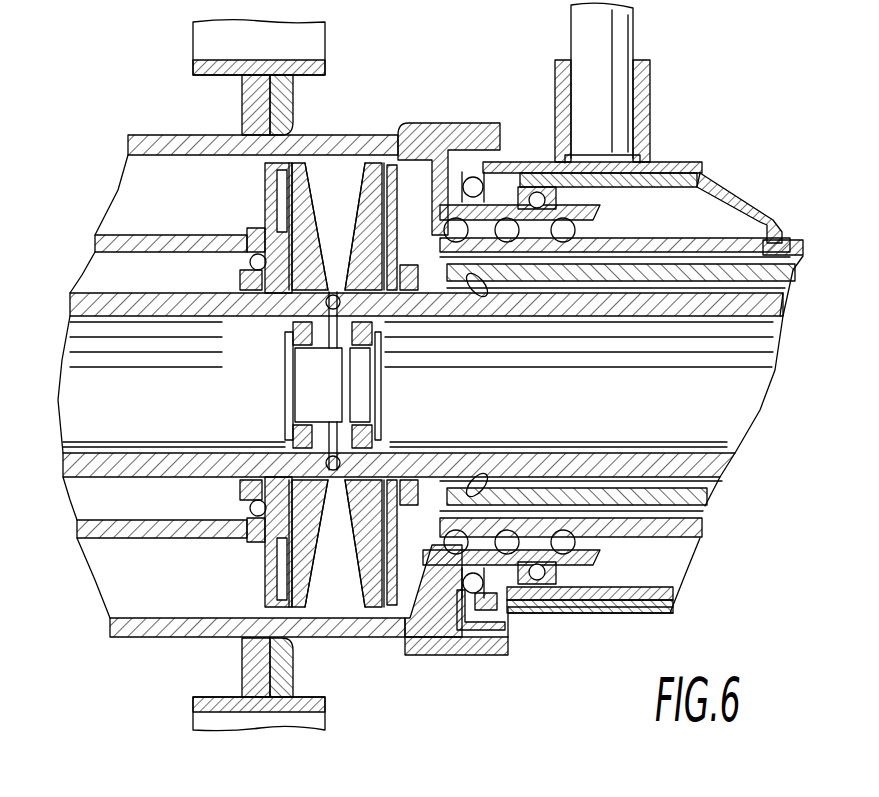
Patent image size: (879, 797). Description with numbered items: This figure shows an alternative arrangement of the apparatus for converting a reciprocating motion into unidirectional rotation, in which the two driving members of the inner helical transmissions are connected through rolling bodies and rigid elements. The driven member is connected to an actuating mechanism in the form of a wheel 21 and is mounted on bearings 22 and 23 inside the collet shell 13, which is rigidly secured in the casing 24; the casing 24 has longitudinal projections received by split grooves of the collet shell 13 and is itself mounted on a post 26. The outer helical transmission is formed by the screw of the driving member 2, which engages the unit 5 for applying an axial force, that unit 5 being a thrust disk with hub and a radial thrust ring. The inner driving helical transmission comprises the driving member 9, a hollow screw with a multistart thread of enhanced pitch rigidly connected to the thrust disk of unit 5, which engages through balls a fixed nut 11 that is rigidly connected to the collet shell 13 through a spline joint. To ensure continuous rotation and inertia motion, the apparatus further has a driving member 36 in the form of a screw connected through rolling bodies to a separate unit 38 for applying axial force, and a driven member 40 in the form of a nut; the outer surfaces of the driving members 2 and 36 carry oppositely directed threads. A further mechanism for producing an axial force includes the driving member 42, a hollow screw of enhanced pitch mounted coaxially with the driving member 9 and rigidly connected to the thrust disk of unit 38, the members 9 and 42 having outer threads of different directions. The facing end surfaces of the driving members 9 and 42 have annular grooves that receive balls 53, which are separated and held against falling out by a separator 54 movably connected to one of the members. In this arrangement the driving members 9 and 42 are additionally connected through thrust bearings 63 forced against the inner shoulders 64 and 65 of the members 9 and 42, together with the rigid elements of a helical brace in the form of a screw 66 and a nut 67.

The driving member 2 is at (708, 236).
The unit for applying an axial force 5 is at (368, 163).
The driving member 9 is at (775, 328).
The fixed nut 11 is at (800, 262).
The collet shell 13 is at (757, 212).
The wheel 21 is at (205, 35).
The bearing 22 is at (462, 165).
The bearing 23 is at (533, 188).
The casing 24 is at (672, 162).
The post 26 is at (636, 32).
The driving member 36 is at (118, 235).
The unit for applying axial force 38 is at (305, 163).
The driven member 40 is at (155, 135).
The driving member 42 is at (80, 300).
The balls 53 is at (335, 290).
The separator 54 is at (334, 480).
The thrust bearings 63 is at (285, 445).
The inner shoulder 64 is at (262, 325).
The inner shoulder 65 is at (405, 325).
The screw 66 is at (300, 373).
The nut 67 is at (360, 380).